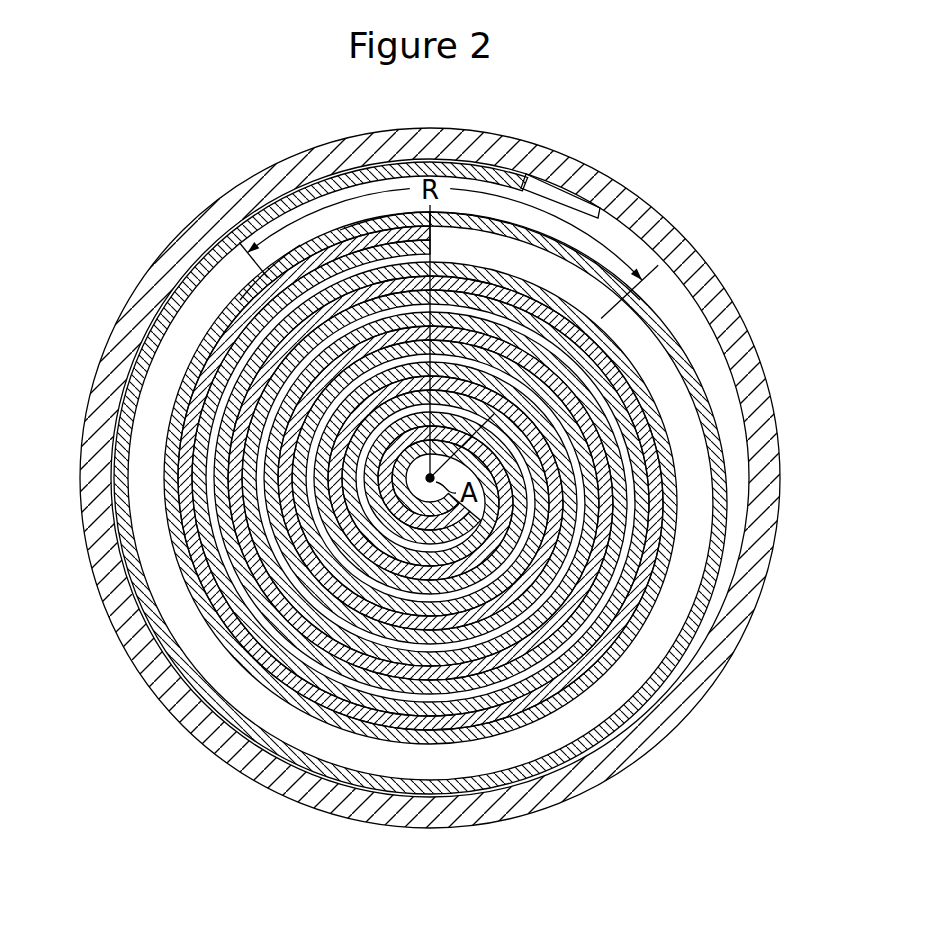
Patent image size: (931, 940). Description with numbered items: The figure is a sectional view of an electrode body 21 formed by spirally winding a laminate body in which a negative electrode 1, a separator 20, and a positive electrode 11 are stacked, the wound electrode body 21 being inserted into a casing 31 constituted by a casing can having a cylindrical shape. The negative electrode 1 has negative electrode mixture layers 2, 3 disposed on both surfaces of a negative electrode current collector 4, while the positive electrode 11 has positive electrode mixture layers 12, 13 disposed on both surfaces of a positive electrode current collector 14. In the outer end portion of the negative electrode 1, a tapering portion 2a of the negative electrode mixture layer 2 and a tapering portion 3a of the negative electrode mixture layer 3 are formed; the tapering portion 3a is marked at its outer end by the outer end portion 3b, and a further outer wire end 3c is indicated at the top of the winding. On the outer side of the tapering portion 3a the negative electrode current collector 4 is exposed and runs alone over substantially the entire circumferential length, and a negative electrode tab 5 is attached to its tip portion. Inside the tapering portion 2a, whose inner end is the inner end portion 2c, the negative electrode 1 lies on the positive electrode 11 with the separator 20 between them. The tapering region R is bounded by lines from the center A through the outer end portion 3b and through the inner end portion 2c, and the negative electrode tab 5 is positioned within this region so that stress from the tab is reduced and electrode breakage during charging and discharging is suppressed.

The negative electrode 1 is at (401, 489).
The negative electrode mixture layer 2 is at (411, 444).
The tapering portion 2a is at (375, 216).
The inner end portion 2c is at (272, 262).
The negative electrode mixture layer 3 is at (376, 548).
The tapering portion 3a is at (516, 232).
The outer end portion 3b is at (630, 298).
The wire end 3c is at (441, 233).
The negative electrode current collector 4 is at (440, 498).
The negative electrode tab 5 is at (552, 180).
The positive electrode 11 is at (420, 548).
The positive electrode mixture layer 12 is at (537, 697).
The positive electrode mixture layer 13 is at (553, 673).
The positive electrode current collector 14 is at (510, 713).
The separator 20 is at (376, 548).
The electrode body 21 is at (206, 703).
The casing 31 is at (728, 306).